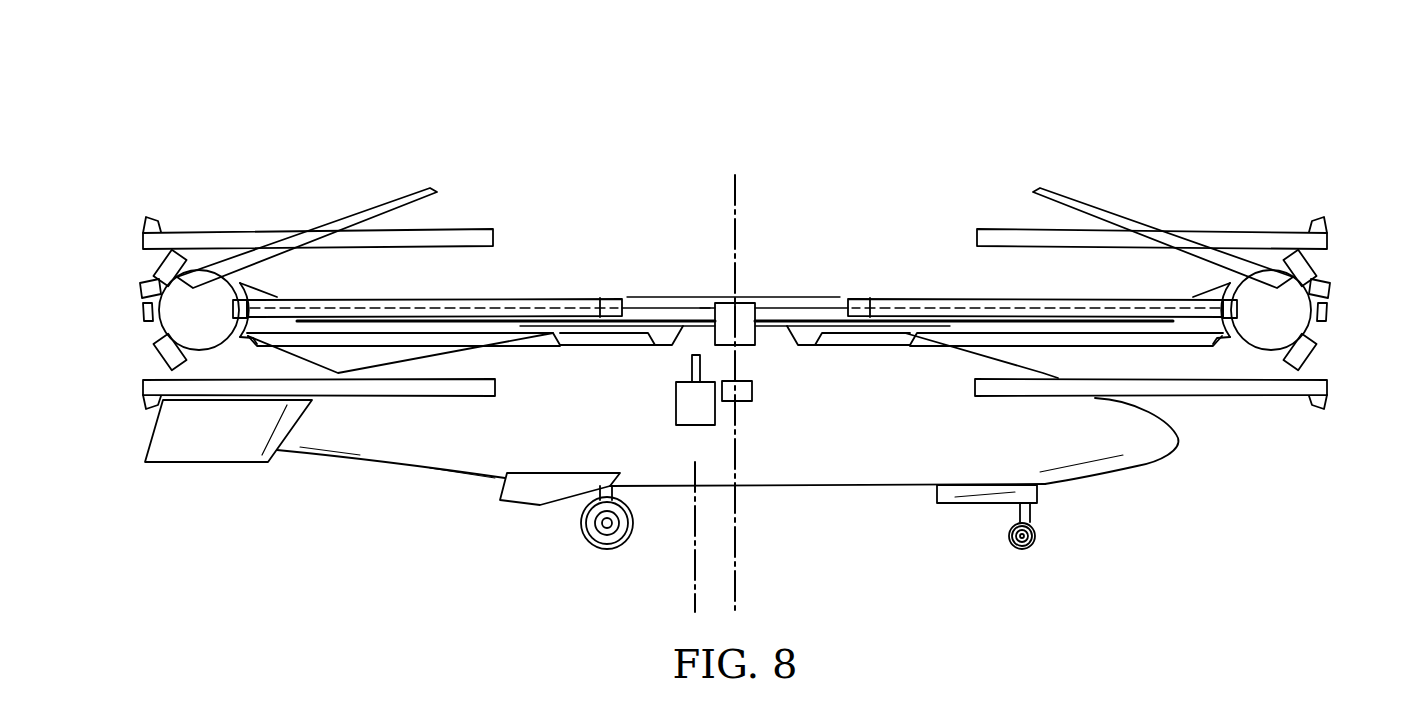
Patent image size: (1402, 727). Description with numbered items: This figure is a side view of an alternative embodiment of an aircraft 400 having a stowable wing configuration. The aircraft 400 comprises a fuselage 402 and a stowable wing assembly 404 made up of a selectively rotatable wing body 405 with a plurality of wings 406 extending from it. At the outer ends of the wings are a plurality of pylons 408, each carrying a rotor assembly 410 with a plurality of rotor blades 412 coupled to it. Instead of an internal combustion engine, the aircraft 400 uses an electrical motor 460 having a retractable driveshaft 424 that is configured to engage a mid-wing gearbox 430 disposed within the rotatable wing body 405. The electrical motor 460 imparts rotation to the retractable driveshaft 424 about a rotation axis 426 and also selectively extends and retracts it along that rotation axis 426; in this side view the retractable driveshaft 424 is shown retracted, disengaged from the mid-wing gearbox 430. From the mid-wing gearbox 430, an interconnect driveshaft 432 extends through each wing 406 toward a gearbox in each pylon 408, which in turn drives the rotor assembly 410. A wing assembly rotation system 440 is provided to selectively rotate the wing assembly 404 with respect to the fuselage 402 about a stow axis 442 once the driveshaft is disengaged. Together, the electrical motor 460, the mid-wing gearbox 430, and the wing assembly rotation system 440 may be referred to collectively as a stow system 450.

The aircraft 400 is at (1066, 103).
The fuselage 402 is at (885, 490).
The stowable wing assembly 404 is at (803, 300).
The selectively rotatable wing body 405 is at (703, 300).
The wings 406 is at (640, 300).
The pylons 408 is at (232, 262).
The rotor assembly 410 is at (152, 330).
The rotor blades 412 is at (458, 229).
The retractable driveshaft 424 is at (690, 362).
The rotation axis 426 is at (693, 600).
The mid-wing gearbox 430 is at (745, 303).
The interconnect driveshaft 432 is at (600, 300).
The wing assembly rotation system 440 is at (752, 394).
The stow axis 442 is at (738, 195).
The stow system 450 is at (754, 440).
The electrical motor 460 is at (675, 410).